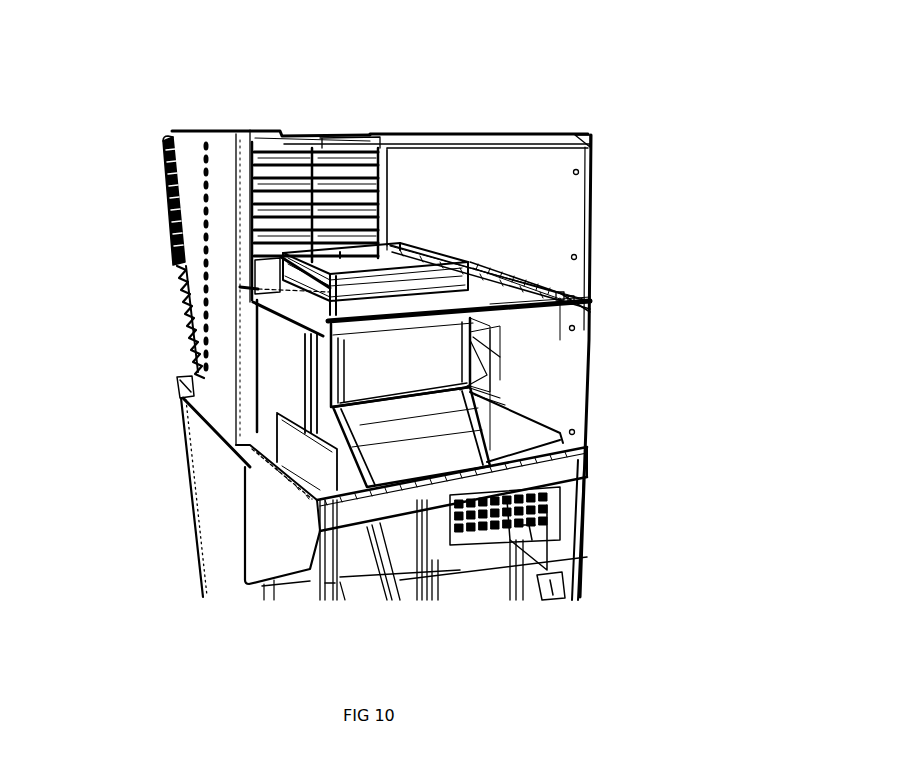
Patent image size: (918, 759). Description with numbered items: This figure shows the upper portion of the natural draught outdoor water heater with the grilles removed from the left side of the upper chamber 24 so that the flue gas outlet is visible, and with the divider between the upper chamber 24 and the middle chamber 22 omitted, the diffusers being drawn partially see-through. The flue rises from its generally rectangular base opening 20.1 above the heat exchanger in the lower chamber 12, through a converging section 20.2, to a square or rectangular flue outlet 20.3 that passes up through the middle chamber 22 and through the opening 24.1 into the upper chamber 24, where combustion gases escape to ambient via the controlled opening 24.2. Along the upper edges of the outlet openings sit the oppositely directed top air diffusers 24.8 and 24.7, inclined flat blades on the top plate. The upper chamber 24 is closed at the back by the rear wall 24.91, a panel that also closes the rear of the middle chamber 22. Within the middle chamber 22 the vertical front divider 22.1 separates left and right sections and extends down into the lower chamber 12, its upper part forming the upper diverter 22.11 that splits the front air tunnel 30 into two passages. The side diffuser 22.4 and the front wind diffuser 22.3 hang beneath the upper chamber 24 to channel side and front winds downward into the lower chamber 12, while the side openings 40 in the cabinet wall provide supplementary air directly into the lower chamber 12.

The lower chamber 12 is at (562, 579).
The base opening 20.1 is at (472, 586).
The converging section 20.2 is at (467, 438).
The flue outlet 20.3 is at (384, 254).
The middle chamber 22 is at (562, 341).
The front divider 22.1 is at (282, 361).
The upper diverter 22.11 is at (195, 205).
The front wind diffuser 22.3 is at (482, 327).
The side diffuser 22.4 is at (484, 352).
The upper chamber 24 is at (565, 200).
The opening 24.1 is at (476, 294).
The controlled opening 24.2 is at (544, 158).
The top air diffuser 24.7 is at (374, 130).
The top air diffuser 24.8 is at (286, 130).
The rear wall 24.91 is at (575, 259).
The front air tunnel 30 is at (176, 191).
The side openings 40 is at (556, 514).